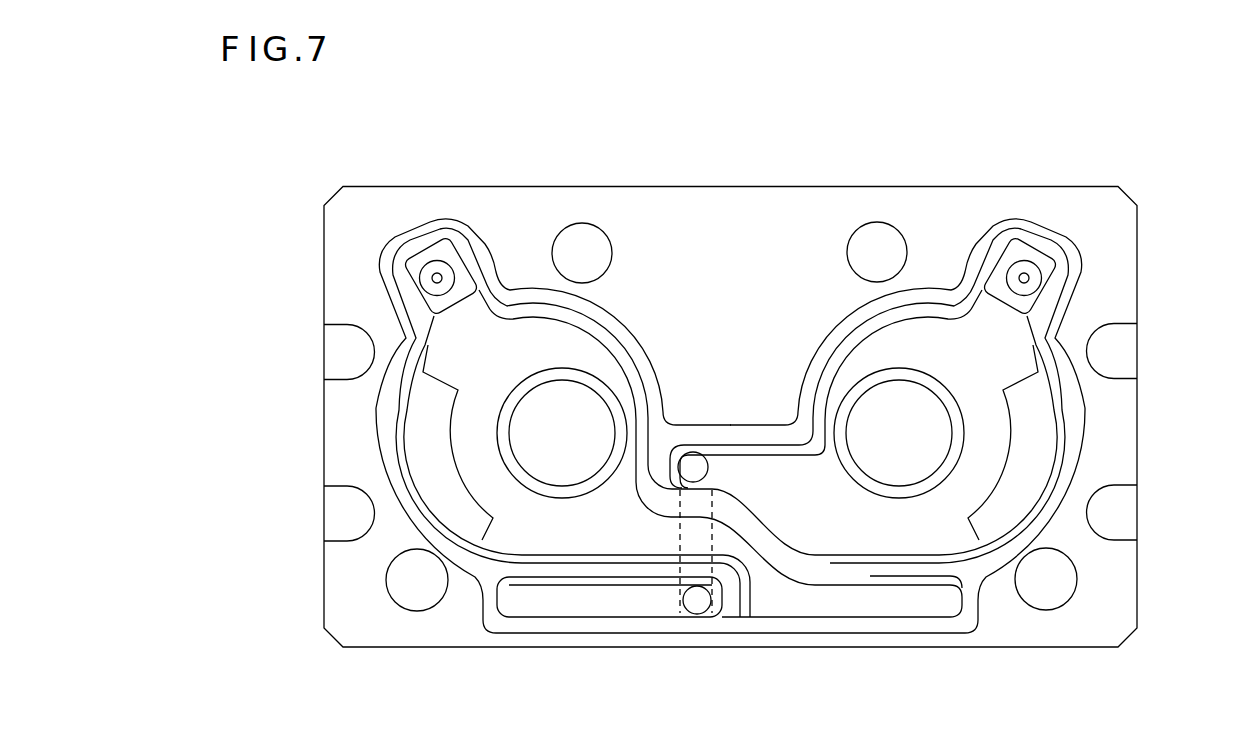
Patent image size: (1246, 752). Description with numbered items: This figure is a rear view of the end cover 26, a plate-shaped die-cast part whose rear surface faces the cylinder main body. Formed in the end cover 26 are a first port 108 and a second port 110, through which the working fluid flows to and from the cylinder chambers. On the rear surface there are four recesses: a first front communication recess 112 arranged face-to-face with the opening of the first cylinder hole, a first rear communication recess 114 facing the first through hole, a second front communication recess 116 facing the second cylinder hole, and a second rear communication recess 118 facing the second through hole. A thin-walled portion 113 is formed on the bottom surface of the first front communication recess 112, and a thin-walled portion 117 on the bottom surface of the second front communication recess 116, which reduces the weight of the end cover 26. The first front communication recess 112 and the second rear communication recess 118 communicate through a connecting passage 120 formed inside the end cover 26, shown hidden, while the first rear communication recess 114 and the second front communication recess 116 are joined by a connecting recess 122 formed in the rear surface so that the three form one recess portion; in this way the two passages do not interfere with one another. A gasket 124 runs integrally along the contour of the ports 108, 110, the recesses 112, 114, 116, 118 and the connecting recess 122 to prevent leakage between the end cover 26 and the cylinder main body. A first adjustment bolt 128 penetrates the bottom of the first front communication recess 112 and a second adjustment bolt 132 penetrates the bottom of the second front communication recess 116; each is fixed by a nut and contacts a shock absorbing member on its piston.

The end cover 26 is at (296, 131).
The first port 108 is at (1024, 276).
The second port 110 is at (437, 276).
The first front communication recess 112 is at (860, 362).
The thin-walled portion 113 is at (1040, 438).
The first rear communication recess 114 is at (891, 598).
The second front communication recess 116 is at (598, 362).
The thin-walled portion 117 is at (420, 430).
The second rear communication recess 118 is at (617, 598).
The connecting passage 120 is at (680, 537).
The connecting recess 122 is at (730, 540).
The gasket 124 is at (1068, 282).
The first adjustment bolt 128 is at (905, 392).
The second adjustment bolt 132 is at (560, 398).